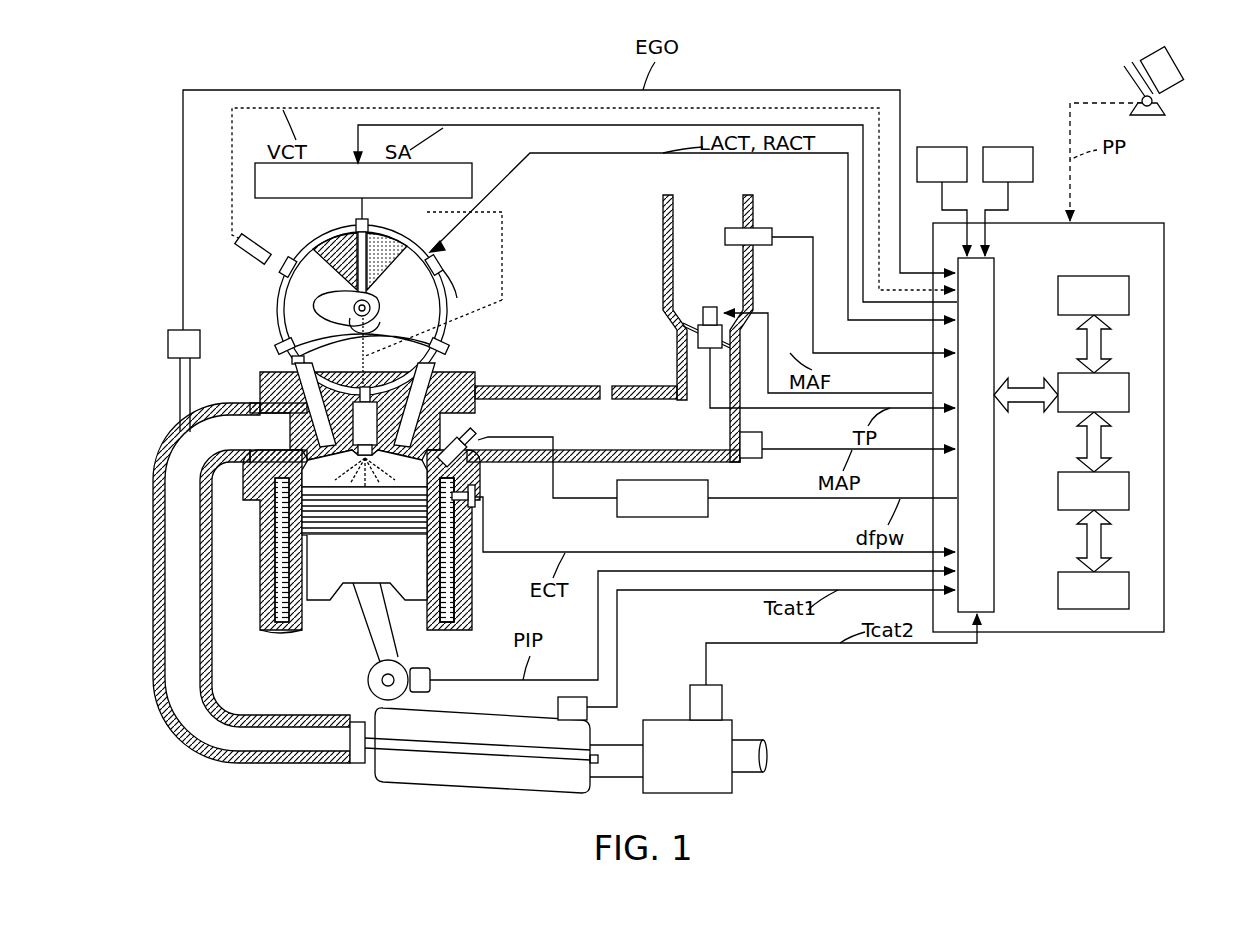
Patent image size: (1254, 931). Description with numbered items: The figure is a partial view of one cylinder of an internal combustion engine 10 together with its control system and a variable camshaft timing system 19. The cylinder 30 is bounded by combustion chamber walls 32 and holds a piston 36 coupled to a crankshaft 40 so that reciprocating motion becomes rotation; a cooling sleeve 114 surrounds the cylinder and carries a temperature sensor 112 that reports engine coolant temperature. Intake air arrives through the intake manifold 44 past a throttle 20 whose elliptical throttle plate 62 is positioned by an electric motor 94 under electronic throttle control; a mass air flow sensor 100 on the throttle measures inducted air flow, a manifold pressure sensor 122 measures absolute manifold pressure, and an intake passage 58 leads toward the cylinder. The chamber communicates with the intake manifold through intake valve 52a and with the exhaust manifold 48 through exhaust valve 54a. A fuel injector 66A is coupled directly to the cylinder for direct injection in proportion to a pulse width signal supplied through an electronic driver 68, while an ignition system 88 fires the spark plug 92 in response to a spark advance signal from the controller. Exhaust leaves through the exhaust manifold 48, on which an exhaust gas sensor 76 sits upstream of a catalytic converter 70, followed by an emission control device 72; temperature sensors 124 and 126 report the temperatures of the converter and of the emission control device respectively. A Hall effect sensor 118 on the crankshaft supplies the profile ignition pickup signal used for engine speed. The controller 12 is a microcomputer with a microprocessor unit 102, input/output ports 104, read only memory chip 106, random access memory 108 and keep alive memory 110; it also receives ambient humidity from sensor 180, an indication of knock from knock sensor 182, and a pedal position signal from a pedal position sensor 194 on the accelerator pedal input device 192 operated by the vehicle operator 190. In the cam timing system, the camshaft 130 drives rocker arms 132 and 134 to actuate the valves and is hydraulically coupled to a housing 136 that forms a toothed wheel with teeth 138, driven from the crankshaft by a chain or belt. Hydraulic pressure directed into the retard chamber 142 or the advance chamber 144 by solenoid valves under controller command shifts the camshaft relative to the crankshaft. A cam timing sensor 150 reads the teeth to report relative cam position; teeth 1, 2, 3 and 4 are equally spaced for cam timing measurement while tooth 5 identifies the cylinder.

The tooth 1 is at (356, 223).
The tooth 2 is at (453, 294).
The tooth 3 is at (388, 385).
The tooth 4 is at (280, 345).
The tooth 5 is at (283, 272).
The internal combustion engine 10 is at (502, 307).
The controller 12 is at (1105, 222).
The variable camshaft timing system 19 is at (522, 228).
The throttle 20 is at (683, 330).
The cylinder 30 is at (262, 526).
The combustion chamber walls 32 is at (300, 632).
The piston 36 is at (352, 588).
The crankshaft 40 is at (368, 682).
The intake manifold 44 is at (608, 425).
The exhaust manifold 48 is at (160, 500).
The intake valve 52a is at (413, 447).
The exhaust valve 54a is at (318, 447).
The intake passage 58 is at (690, 380).
The throttle plate 62 is at (692, 320).
The fuel injector 66A is at (482, 438).
The electronic driver 68 is at (710, 490).
The catalytic converter 70 is at (438, 716).
The emission control device 72 is at (660, 720).
The exhaust gas sensor 76 is at (168, 330).
The ignition system 88 is at (474, 170).
The spark plug 92 is at (360, 390).
The electric motor 94 is at (713, 306).
The mass air flow sensor 100 is at (765, 230).
The microprocessor unit 102 is at (1120, 373).
The input/output ports 104 is at (996, 285).
The read only memory chip 106 is at (1110, 276).
The random access memory 108 is at (1120, 472).
The keep alive memory 110 is at (1120, 572).
The temperature sensor 112 is at (477, 492).
The cooling sleeve 114 is at (455, 580).
The Hall effect sensor 118 is at (433, 672).
The manifold pressure sensor 122 is at (765, 440).
The temperature sensor 124 is at (558, 710).
The temperature sensor 126 is at (723, 705).
The camshaft 130 is at (335, 303).
The rocker arm 132 is at (292, 360).
The rocker arm 134 is at (442, 358).
The housing 136 is at (278, 319).
The teeth 138 is at (446, 268).
The retard chamber 142 is at (395, 265).
The advance chamber 144 is at (322, 258).
The cam timing sensor 150 is at (258, 262).
The humidity sensor 180 is at (942, 201).
The knock sensor 182 is at (1008, 201).
The vehicle operator 190 is at (1168, 72).
The input device 192 is at (1127, 79).
The pedal position sensor 194 is at (1160, 105).